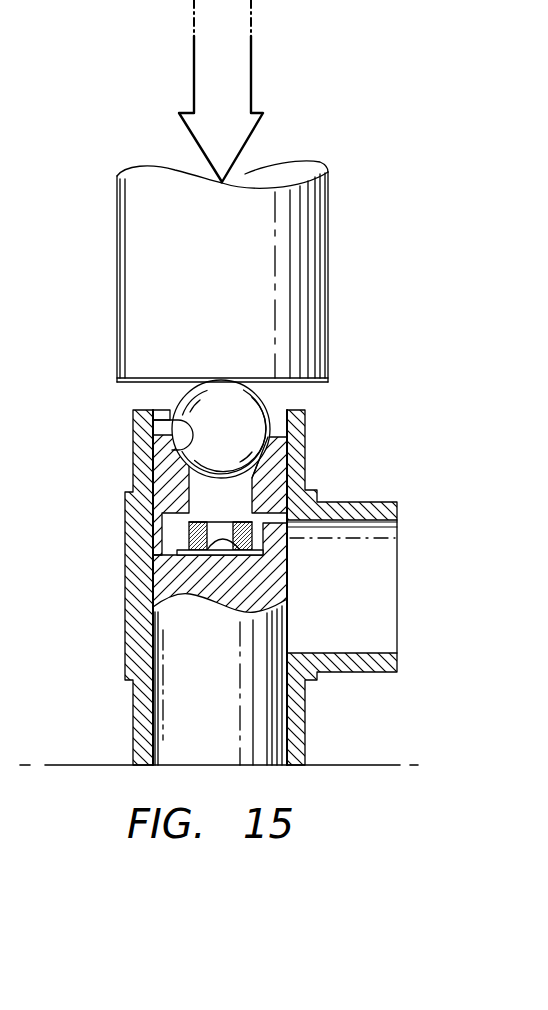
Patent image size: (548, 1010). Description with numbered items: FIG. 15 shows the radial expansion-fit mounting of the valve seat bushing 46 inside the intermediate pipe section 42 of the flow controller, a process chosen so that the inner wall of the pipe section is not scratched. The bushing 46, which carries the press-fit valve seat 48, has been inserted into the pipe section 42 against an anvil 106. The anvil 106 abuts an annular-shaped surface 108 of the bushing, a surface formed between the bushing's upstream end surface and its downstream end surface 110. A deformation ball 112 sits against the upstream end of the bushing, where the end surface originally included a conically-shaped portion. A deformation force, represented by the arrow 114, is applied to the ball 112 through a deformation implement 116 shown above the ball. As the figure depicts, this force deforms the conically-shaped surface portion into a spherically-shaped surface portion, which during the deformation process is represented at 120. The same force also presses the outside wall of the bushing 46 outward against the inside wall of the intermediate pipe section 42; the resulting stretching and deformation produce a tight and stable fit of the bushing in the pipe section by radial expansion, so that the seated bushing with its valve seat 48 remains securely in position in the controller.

The intermediate pipe section 42 is at (313, 483).
The valve seat bushing 46 is at (276, 462).
The valve seat 48 is at (250, 531).
The anvil 106 is at (268, 590).
The annular-shaped surface 108 is at (153, 541).
The downstream end surface 110 is at (153, 580).
The deformation ball 112 is at (252, 408).
The deformation force 114 is at (236, 58).
The deformation implement 116 is at (305, 220).
The spherically-shaped surface portion 120 is at (157, 420).